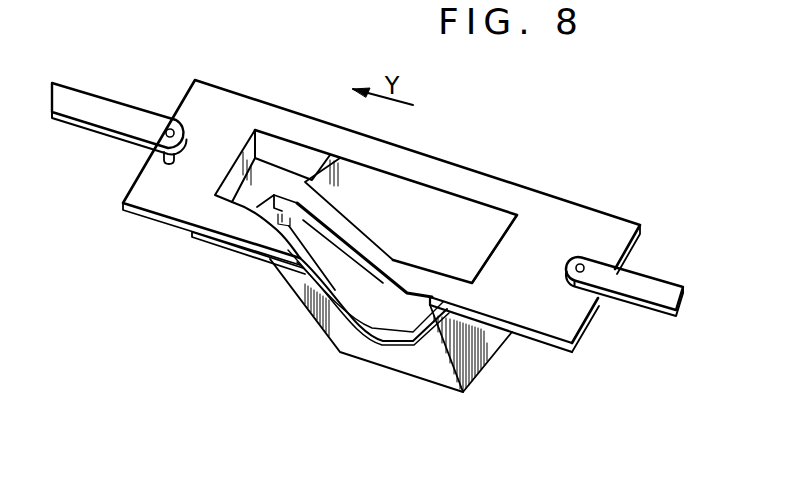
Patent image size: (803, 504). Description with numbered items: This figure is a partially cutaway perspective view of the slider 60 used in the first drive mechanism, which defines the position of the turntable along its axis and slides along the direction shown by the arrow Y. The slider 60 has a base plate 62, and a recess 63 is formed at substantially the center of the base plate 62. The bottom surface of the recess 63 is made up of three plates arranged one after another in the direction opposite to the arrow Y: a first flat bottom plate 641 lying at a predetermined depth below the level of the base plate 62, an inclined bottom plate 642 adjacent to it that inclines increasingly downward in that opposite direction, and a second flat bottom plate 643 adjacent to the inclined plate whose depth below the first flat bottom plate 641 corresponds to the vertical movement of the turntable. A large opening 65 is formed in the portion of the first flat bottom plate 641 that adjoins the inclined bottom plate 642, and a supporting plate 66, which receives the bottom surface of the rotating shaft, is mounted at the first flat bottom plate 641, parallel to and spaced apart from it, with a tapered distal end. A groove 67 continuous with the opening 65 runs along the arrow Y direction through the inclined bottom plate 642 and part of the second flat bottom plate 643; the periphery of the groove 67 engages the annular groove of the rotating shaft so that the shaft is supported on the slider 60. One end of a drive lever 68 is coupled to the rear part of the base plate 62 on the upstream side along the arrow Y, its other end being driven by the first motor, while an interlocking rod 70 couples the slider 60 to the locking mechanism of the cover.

The slider 60 is at (468, 168).
The base plate 62 is at (525, 325).
The recess 63 is at (498, 225).
The first flat bottom plate 641 is at (256, 180).
The inclined bottom plate 642 is at (322, 270).
The second flat bottom plate 643 is at (385, 330).
The large opening 65 is at (298, 204).
The supporting plate 66 is at (283, 223).
The groove 67 is at (332, 248).
The drive lever 68 is at (637, 288).
The interlocking rod 70 is at (128, 102).